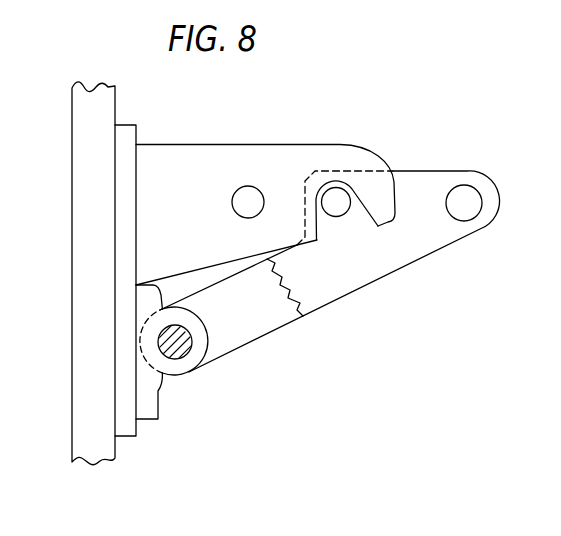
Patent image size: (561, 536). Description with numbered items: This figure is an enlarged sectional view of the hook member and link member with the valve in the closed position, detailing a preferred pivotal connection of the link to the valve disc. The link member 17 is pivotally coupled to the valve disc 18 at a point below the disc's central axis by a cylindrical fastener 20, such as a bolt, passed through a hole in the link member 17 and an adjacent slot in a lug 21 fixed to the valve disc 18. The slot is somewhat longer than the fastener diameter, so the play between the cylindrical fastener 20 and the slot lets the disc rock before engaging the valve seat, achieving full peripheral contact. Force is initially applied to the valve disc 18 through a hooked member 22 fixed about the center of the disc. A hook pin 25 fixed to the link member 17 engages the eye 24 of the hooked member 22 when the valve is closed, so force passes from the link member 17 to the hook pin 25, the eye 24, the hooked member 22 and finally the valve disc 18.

The link member 17 is at (330, 253).
The valve disc 18 is at (118, 456).
The cylindrical fastener 20 is at (178, 348).
The lug 21 is at (163, 383).
The hooked member 22 is at (265, 192).
The eye 24 is at (360, 208).
The hook pin 25 is at (325, 219).